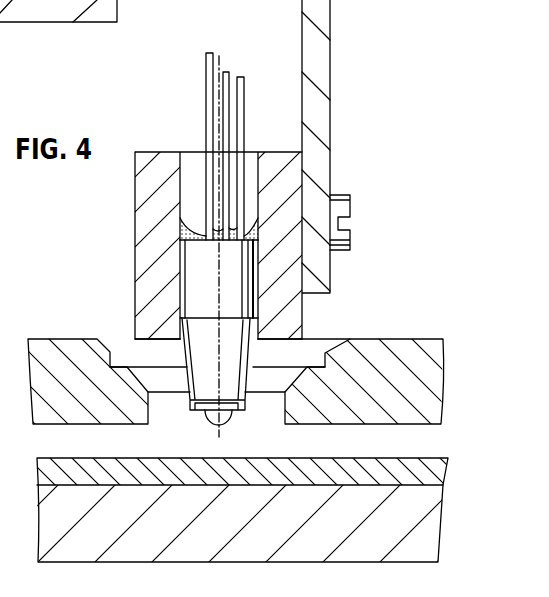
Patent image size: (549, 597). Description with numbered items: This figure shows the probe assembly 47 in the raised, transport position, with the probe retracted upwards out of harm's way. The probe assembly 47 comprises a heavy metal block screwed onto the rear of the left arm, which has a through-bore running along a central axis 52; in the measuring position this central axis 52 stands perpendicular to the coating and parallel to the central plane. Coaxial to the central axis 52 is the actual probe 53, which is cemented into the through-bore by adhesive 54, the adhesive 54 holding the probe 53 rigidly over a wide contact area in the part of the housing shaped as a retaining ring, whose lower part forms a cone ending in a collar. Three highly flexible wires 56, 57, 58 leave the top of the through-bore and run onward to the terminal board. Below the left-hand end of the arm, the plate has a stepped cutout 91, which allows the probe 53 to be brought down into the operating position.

The probe assembly 47 is at (167, 129).
The central axis 52 is at (220, 56).
The probe 53 is at (187, 310).
The adhesive 54 is at (259, 222).
The flexible wire 56 is at (208, 84).
The flexible wire 57 is at (226, 79).
The flexible wire 58 is at (243, 107).
The stepped cutout 91 is at (307, 359).